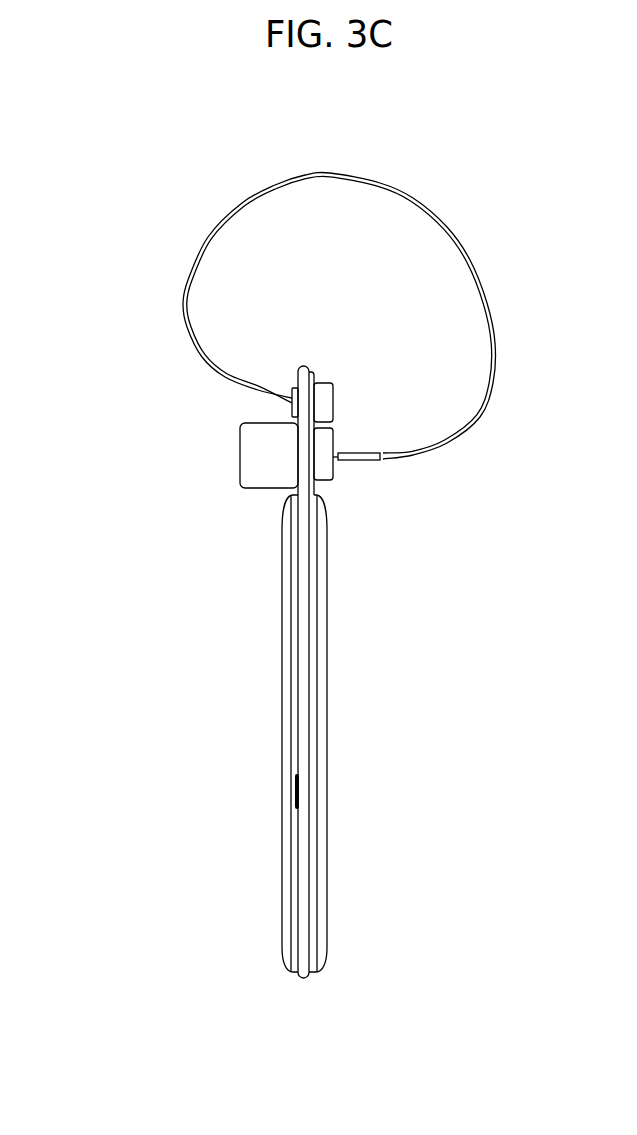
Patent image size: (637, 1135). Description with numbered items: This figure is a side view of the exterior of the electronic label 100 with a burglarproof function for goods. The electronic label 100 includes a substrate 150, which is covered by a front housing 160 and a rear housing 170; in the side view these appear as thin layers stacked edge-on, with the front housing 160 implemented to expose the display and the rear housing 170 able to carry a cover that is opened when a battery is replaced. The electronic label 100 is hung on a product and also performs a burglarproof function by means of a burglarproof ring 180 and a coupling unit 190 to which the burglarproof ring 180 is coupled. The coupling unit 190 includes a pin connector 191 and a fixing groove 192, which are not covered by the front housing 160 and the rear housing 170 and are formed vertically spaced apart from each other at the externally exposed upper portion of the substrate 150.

The electronic label 100 is at (440, 549).
The substrate 150 is at (305, 760).
The front housing 160 is at (290, 702).
The rear housing 170 is at (326, 722).
The burglarproof ring 180 is at (448, 231).
The coupling unit 190 is at (82, 403).
The pin connector 191 is at (258, 462).
The fixing groove 192 is at (293, 411).